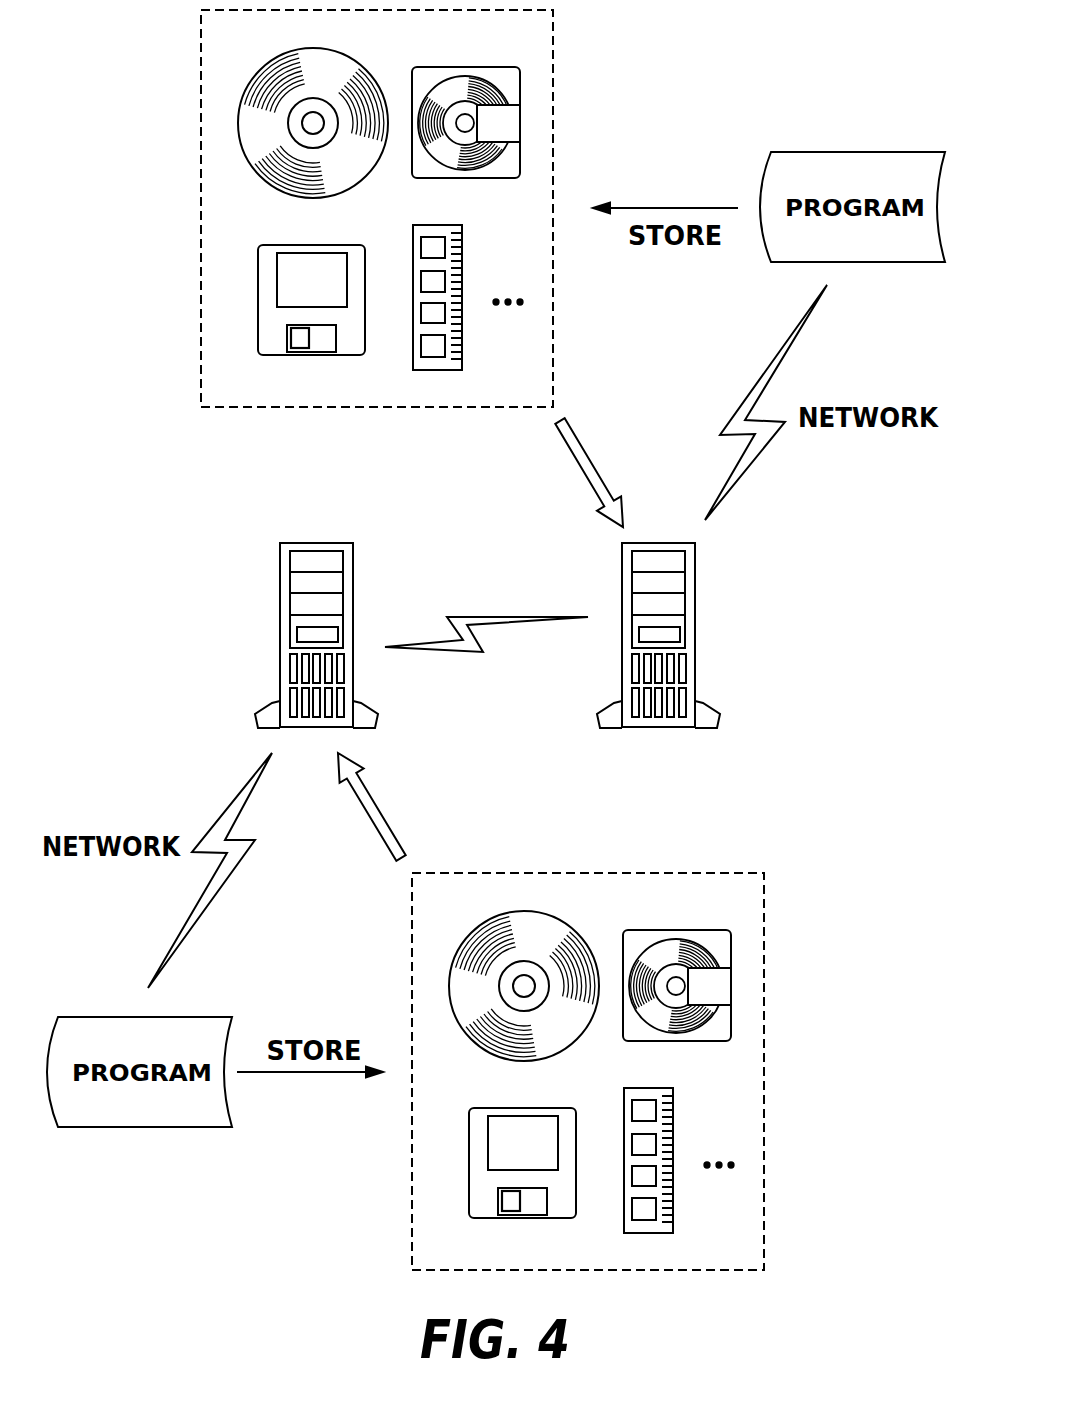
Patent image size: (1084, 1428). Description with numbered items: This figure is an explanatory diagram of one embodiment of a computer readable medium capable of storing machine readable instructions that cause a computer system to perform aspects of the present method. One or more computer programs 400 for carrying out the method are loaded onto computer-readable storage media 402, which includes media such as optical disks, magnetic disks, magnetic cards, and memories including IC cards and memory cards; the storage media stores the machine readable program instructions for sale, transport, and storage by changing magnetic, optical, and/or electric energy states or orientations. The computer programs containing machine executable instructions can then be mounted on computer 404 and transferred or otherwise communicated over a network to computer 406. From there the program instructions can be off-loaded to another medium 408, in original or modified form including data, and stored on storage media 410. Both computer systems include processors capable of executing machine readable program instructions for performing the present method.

The computer program 400 is at (177, 1016).
The computer-readable storage media 402 is at (765, 950).
The computer 404 is at (317, 542).
The computer 406 is at (695, 635).
The medium 408 is at (860, 150).
The storage media 410 is at (557, 97).